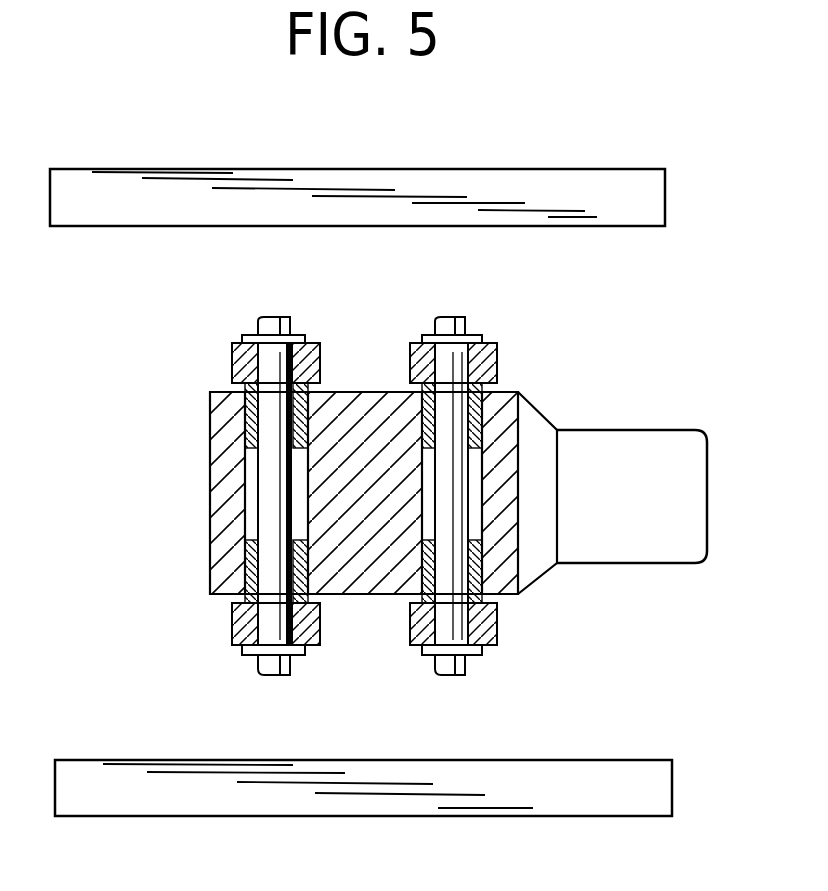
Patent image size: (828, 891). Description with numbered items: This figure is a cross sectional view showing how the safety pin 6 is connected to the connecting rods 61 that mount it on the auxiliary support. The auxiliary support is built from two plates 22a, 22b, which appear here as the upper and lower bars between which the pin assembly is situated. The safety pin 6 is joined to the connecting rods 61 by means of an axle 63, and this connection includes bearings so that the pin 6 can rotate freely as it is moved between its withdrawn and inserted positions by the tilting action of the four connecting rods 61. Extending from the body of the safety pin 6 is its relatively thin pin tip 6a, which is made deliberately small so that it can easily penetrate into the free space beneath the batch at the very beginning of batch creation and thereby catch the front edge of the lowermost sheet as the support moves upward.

The plate 22a is at (575, 186).
The plate 22b is at (657, 785).
The safety pin 6 is at (498, 563).
The pin tip 6a is at (665, 540).
The connecting rods 61 is at (235, 362).
The axle 63 is at (265, 315).